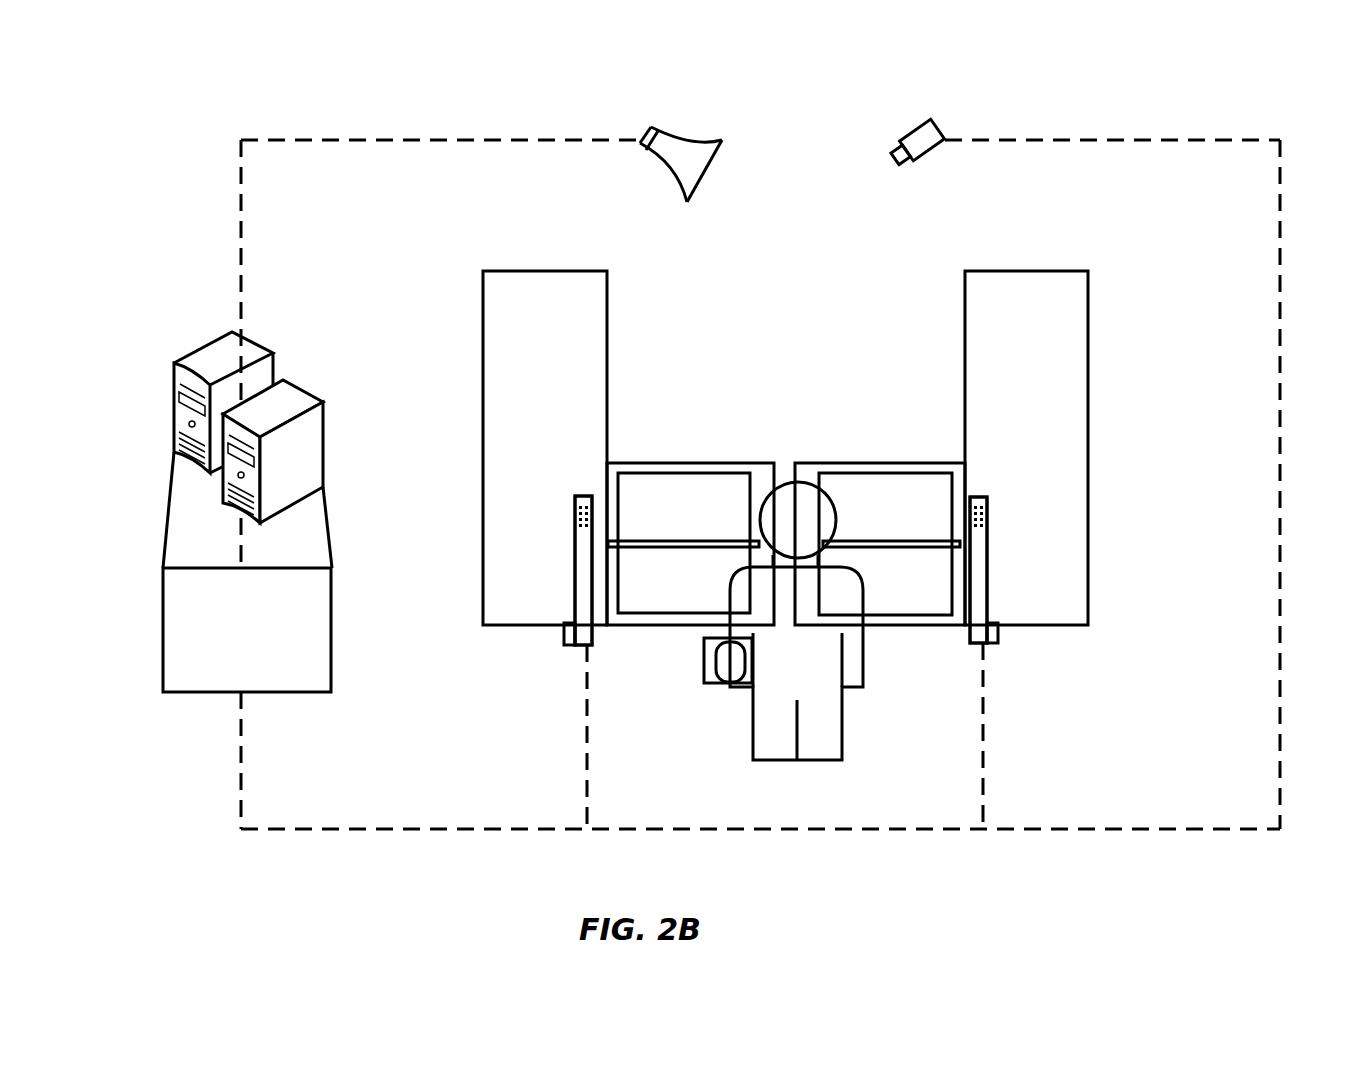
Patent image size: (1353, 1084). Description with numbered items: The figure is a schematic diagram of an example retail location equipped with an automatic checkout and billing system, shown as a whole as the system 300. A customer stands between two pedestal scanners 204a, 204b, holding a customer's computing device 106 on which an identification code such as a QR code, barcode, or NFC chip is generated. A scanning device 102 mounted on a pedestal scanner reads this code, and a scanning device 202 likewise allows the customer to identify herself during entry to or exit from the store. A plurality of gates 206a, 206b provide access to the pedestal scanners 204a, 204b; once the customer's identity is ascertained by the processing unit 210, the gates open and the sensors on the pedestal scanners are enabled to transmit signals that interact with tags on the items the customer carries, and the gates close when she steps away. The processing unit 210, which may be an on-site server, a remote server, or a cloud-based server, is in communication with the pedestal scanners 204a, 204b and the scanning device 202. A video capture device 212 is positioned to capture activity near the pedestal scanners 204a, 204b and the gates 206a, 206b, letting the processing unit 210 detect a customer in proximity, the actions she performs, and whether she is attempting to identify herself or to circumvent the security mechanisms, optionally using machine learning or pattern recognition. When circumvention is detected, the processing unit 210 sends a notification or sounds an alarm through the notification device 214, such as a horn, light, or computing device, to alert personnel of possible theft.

The system 300 is at (208, 118).
The notification device 214 is at (682, 140).
The video capture device 212 is at (940, 130).
The processing unit 210 is at (247, 512).
The gate 206a is at (670, 462).
The gate 206b is at (885, 463).
The scanning device 202 is at (577, 513).
The pedestal scanner 204a is at (575, 562).
The pedestal scanner 204b is at (985, 568).
The scanning device 102 is at (985, 513).
The customer's computing device 106 is at (740, 684).